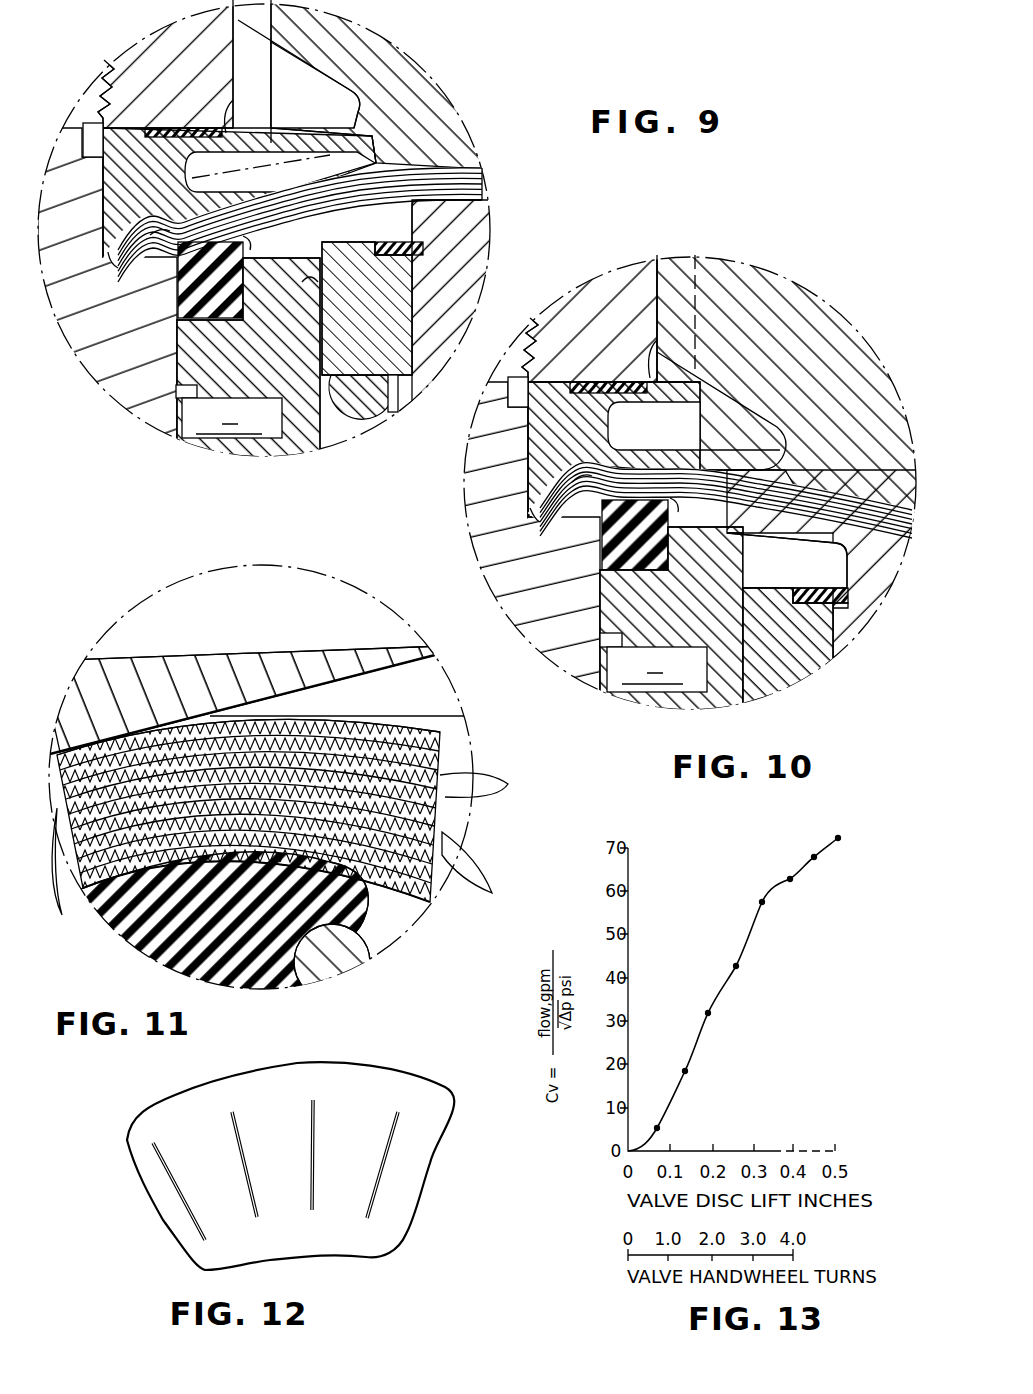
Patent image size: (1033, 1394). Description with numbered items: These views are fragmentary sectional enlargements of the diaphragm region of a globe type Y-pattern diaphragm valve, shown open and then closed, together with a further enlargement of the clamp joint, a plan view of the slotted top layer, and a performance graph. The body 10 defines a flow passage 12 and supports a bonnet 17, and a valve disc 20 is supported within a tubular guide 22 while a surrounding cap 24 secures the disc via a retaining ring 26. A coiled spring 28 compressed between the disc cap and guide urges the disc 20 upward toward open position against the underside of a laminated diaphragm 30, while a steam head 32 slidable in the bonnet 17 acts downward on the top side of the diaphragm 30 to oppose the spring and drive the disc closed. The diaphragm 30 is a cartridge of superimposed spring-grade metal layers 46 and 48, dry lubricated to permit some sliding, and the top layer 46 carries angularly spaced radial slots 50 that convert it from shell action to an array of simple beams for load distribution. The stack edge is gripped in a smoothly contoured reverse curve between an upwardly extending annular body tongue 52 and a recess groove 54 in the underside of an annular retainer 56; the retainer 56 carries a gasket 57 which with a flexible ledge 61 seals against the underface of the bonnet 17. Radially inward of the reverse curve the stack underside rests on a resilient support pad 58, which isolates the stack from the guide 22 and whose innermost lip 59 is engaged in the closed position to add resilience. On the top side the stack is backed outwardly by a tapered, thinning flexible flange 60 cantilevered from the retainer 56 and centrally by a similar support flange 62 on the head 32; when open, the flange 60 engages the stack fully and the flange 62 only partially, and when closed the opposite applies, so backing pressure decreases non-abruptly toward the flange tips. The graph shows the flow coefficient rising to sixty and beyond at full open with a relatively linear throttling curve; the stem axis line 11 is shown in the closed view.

In FIG. 9, the body 10 is at (123, 377).
In FIG. 10, the body 10 is at (507, 572).
In FIG. 10, the stem axis centerline 11 is at (657, 457).
In FIG. 9, the flow passage 12 is at (381, 170).
In FIG. 9, the bonnet 17 is at (155, 40).
In FIG. 10, the bonnet 17 is at (603, 287).
In FIG. 9, the valve disc 20 is at (468, 246).
In FIG. 10, the valve disc 20 is at (867, 583).
In FIG. 9, the tubular guide 22 is at (236, 362).
In FIG. 10, the tubular guide 22 is at (664, 615).
In FIG. 9, the cap 24 is at (354, 308).
In FIG. 10, the cap 24 is at (774, 657).
In FIG. 11, the cap 24 is at (330, 969).
In FIG. 9, the retaining ring 26 is at (398, 240).
In FIG. 10, the retaining ring 26 is at (823, 590).
In FIG. 9, the coiled spring 28 is at (358, 402).
In FIG. 9, the laminated diaphragm 30 is at (432, 169).
In FIG. 10, the laminated diaphragm 30 is at (800, 496).
In FIG. 11, the laminated diaphragm 30 is at (377, 746).
In FIG. 9, the steam head 32 is at (408, 80).
In FIG. 10, the steam head 32 is at (816, 402).
In FIG. 11, the top layer 46 is at (470, 785).
In FIG. 12, the top layer 46 is at (373, 1087).
In FIG. 11, the layers 48 is at (57, 875).
In FIG. 12, the radial slots 50 is at (195, 1213).
In FIG. 9, the annular body tongue 52 is at (110, 240).
In FIG. 10, the annular body tongue 52 is at (537, 503).
In FIG. 9, the recess groove 54 is at (140, 223).
In FIG. 10, the recess groove 54 is at (597, 467).
In FIG. 9, the annular retainer 56 is at (115, 182).
In FIG. 10, the annular retainer 56 is at (542, 450).
In FIG. 9, the gasket 57 is at (217, 132).
In FIG. 10, the gasket 57 is at (612, 382).
In FIG. 9, the resilient support pad 58 is at (178, 283).
In FIG. 10, the resilient support pad 58 is at (600, 535).
In FIG. 11, the resilient support pad 58 is at (232, 945).
In FIG. 9, the innermost lip 59 is at (243, 240).
In FIG. 10, the innermost lip 59 is at (673, 507).
In FIG. 11, the innermost lip 59 is at (367, 927).
In FIG. 9, the flexible flange 60 is at (230, 200).
In FIG. 10, the flexible flange 60 is at (663, 452).
In FIG. 11, the flexible flange 60 is at (330, 660).
In FIG. 9, the flexible ledge 61 is at (228, 107).
In FIG. 10, the flexible ledge 61 is at (657, 340).
In FIG. 9, the support flange 62 is at (310, 137).
In FIG. 10, the support flange 62 is at (743, 477).